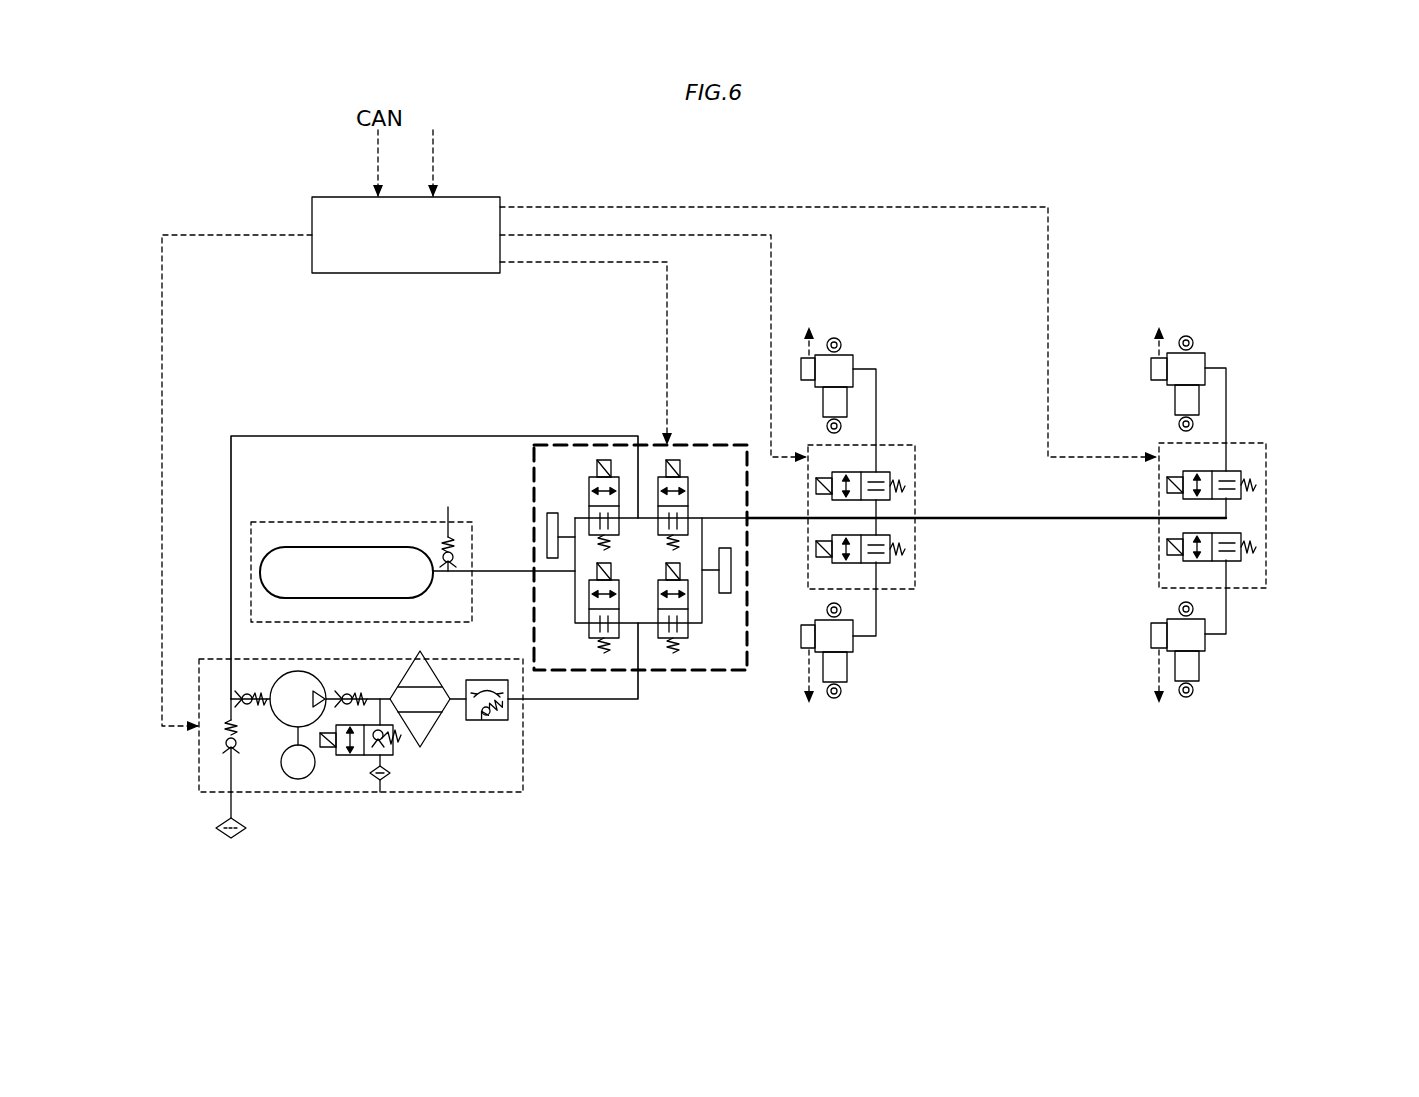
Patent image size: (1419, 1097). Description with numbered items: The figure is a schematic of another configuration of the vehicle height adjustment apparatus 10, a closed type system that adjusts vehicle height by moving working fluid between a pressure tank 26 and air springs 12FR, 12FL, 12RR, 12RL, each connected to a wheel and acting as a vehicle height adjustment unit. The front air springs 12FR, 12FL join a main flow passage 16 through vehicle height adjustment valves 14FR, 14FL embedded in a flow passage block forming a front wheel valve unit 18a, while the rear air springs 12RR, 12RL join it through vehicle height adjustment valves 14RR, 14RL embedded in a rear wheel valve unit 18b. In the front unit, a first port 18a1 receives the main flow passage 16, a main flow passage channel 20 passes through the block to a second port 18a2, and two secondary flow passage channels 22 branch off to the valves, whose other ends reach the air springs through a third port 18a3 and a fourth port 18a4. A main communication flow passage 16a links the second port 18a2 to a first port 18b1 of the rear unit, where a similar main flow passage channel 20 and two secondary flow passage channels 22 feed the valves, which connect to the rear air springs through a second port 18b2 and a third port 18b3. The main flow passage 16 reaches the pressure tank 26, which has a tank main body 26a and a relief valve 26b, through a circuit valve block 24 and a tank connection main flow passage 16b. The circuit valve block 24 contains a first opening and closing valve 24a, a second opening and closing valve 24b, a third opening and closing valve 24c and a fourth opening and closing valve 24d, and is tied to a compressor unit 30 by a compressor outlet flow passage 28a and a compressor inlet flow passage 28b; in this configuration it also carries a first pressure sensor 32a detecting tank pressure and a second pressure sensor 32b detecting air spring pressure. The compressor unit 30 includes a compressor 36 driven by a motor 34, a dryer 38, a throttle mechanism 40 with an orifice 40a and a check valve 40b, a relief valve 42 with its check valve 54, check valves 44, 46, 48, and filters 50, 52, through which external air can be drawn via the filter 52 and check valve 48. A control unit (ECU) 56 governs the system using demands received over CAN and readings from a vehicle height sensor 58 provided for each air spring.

The vehicle height adjustment apparatus 10 is at (756, 852).
The air spring 12FR is at (840, 350).
The air spring 12FL is at (853, 667).
The air spring 12RR is at (1195, 348).
The air spring 12RL is at (1205, 666).
The vehicle height adjustment valve 14FR is at (882, 470).
The vehicle height adjustment valve 14FL is at (905, 563).
The vehicle height adjustment valve 14RR is at (1232, 469).
The vehicle height adjustment valve 14RL is at (1256, 561).
The main flow passage 16 is at (762, 522).
The main communication flow passage 16a is at (1090, 521).
The tank connection main flow passage 16b is at (488, 571).
The front wheel valve unit 18a is at (918, 590).
The first port 18a1 is at (808, 518).
The second port 18a2 is at (918, 518).
The third port 18a3 is at (878, 445).
The fourth port 18a4 is at (880, 593).
The rear wheel valve unit 18b is at (1268, 590).
The first port 18b1 is at (1159, 518).
The second port 18b2 is at (1228, 445).
The third port 18b3 is at (1230, 593).
The main flow passage channel 20 is at (817, 522).
The secondary flow passage channel 22 is at (892, 498).
The circuit valve block 24 is at (640, 581).
The first opening and closing valve 24a is at (604, 460).
The second opening and closing valve 24b is at (617, 640).
The third opening and closing valve 24c is at (684, 640).
The fourth opening and closing valve 24d is at (688, 460).
The pressure tank 26 is at (361, 543).
The tank main body 26a is at (340, 547).
The relief valve 26b is at (440, 555).
The compressor outlet flow passage 28a is at (570, 700).
The compressor inlet flow passage 28b is at (382, 436).
The compressor unit 30 is at (441, 796).
The first pressure sensor 32a is at (556, 513).
The second pressure sensor 32b is at (728, 593).
The motor 34 is at (302, 780).
The compressor 36 is at (278, 725).
The dryer 38 is at (437, 720).
The throttle mechanism 40 is at (502, 750).
The orifice 40a is at (490, 680).
The check valve 40b is at (470, 720).
The relief valve 42 is at (357, 757).
The check valve 44 is at (362, 690).
The check valve 46 is at (240, 690).
The check valve 48 is at (215, 745).
The filter 50 is at (388, 783).
The filter 52 is at (238, 840).
The check valve 54 is at (390, 757).
The control unit (ECU) 56 is at (462, 198).
The vehicle height sensor 58 is at (1151, 634).